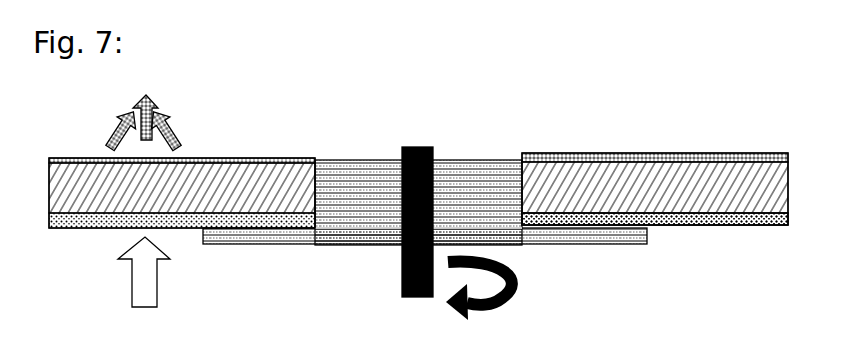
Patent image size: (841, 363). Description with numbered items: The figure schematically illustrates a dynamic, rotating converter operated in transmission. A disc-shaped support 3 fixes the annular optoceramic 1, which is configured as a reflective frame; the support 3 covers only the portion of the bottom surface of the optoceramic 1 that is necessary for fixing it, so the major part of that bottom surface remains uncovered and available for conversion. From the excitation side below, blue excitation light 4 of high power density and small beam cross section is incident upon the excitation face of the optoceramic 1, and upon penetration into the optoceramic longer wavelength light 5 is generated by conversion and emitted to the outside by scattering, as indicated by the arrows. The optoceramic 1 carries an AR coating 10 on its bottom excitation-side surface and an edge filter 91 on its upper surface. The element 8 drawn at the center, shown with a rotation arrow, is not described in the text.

The optoceramic 1 is at (61, 170).
The disc-shaped support 3 is at (355, 160).
The blue excitation light 4 is at (162, 282).
The longer wavelength light 5 is at (147, 96).
The rotatable heating element 8 is at (418, 298).
The AR coating 10 is at (683, 222).
The edge filter 91 is at (655, 153).